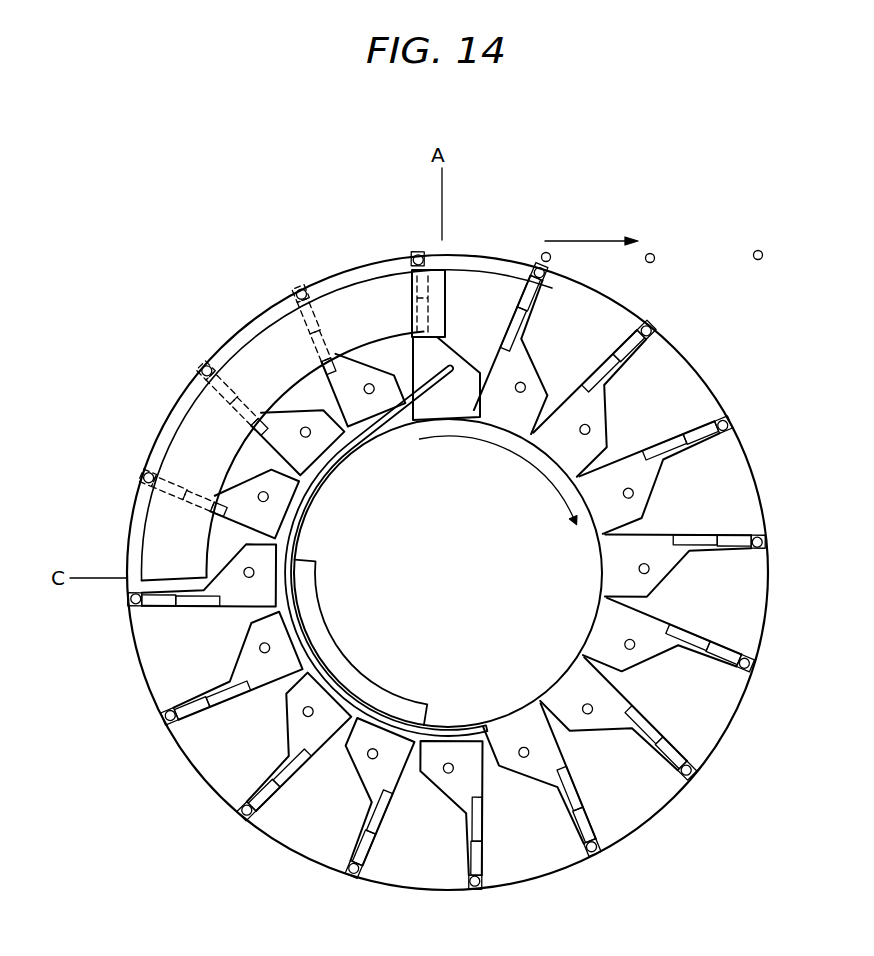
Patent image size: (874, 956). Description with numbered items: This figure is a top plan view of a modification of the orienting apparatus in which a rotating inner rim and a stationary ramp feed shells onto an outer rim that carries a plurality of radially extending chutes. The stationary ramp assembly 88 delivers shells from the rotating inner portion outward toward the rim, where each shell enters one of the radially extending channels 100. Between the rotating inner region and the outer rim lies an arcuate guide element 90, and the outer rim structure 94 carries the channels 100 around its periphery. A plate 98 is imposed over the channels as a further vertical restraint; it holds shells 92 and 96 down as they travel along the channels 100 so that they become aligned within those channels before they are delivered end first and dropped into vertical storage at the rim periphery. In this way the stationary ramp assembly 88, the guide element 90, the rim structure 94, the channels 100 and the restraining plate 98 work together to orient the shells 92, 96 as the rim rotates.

The stationary ramp assembly 88 is at (387, 700).
The arcuate guide rail 90 is at (390, 409).
The shell 92 is at (740, 533).
The drum 94 is at (750, 590).
The shell 96 is at (693, 770).
The plate 98 is at (192, 420).
The channel 100 is at (625, 467).